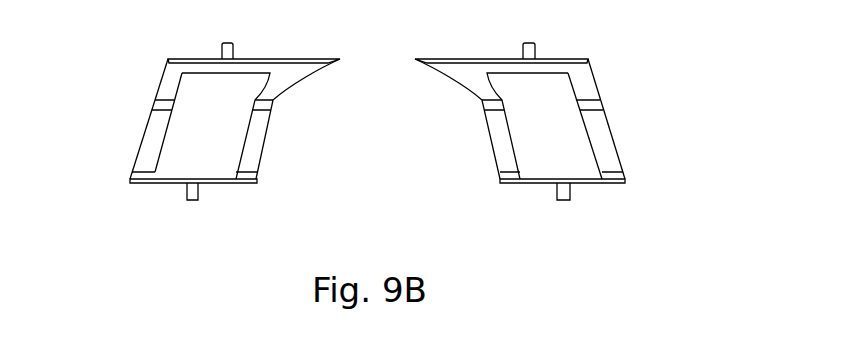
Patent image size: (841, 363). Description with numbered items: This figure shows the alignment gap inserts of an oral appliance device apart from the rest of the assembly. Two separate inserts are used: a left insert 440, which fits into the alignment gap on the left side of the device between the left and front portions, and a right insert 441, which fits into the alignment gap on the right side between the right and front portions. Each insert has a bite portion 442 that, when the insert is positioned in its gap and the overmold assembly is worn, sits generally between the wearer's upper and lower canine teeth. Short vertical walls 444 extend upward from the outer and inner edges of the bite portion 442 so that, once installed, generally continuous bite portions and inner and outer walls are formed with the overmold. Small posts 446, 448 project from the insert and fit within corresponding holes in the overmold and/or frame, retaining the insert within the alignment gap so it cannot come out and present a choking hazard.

The left insert 440 is at (200, 129).
The right insert 441 is at (650, 134).
The bite portion 442 is at (222, 145).
The vertical wall 444 is at (141, 141).
The post 446 is at (191, 202).
The post 448 is at (226, 42).